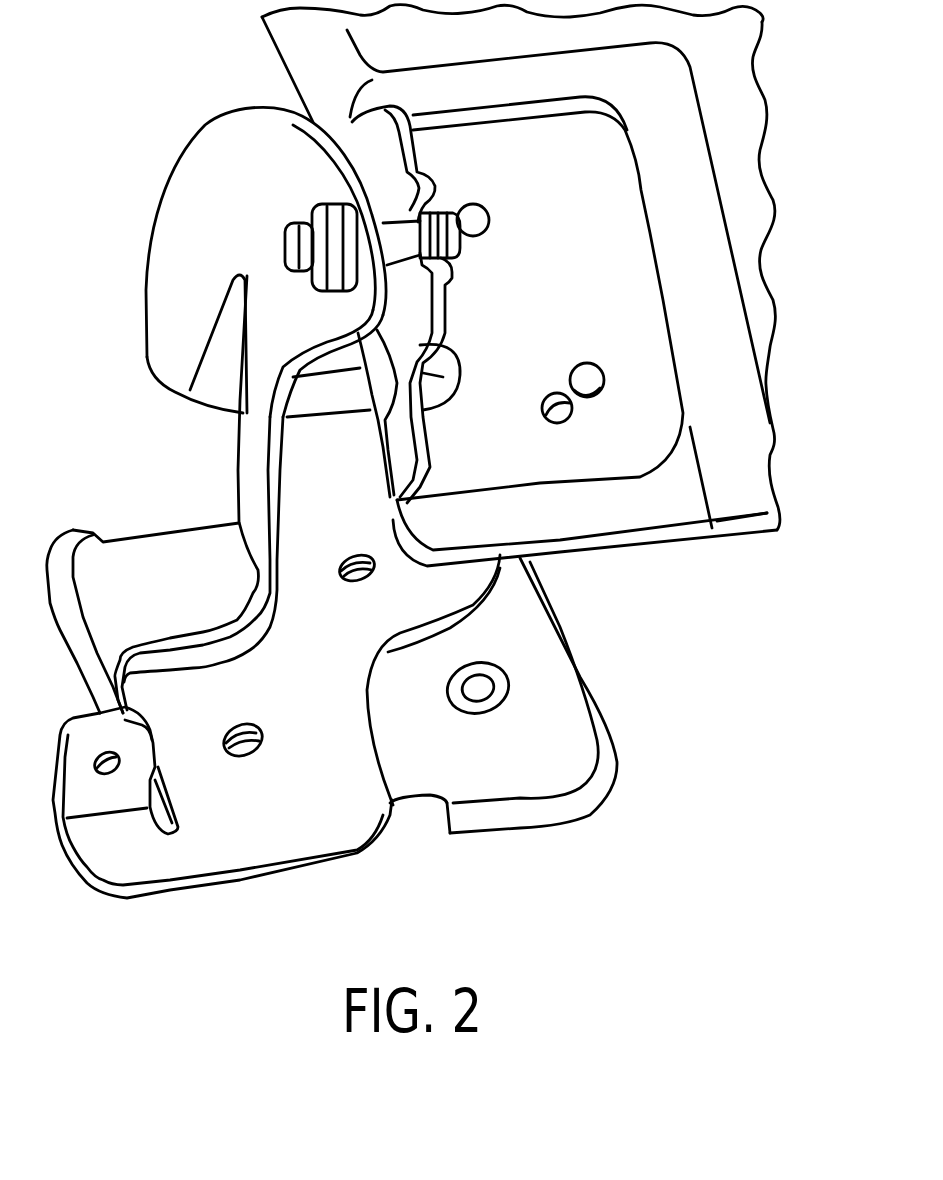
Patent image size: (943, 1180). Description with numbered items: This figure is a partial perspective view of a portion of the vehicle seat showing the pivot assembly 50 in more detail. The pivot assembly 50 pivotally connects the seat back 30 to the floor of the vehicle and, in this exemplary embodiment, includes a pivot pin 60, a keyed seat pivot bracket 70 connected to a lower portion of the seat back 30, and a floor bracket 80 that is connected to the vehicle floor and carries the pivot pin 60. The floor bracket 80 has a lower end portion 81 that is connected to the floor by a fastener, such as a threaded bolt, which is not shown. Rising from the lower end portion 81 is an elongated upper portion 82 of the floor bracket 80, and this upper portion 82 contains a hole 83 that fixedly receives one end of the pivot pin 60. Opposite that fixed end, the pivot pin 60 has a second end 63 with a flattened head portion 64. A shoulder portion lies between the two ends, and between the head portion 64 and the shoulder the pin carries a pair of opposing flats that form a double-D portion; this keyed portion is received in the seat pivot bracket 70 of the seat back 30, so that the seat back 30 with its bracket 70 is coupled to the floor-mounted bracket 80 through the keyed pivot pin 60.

The seat back 30 is at (756, 79).
The pivot assembly 50 is at (140, 211).
The pivot pin 60 is at (290, 245).
The second end 63 is at (440, 250).
The flattened head portion 64 is at (447, 213).
The keyed seat pivot bracket 70 is at (373, 139).
The floor bracket 80 is at (287, 893).
The lower end portion 81 is at (333, 812).
The elongated upper portion 82 is at (228, 152).
The hole 83 is at (291, 276).